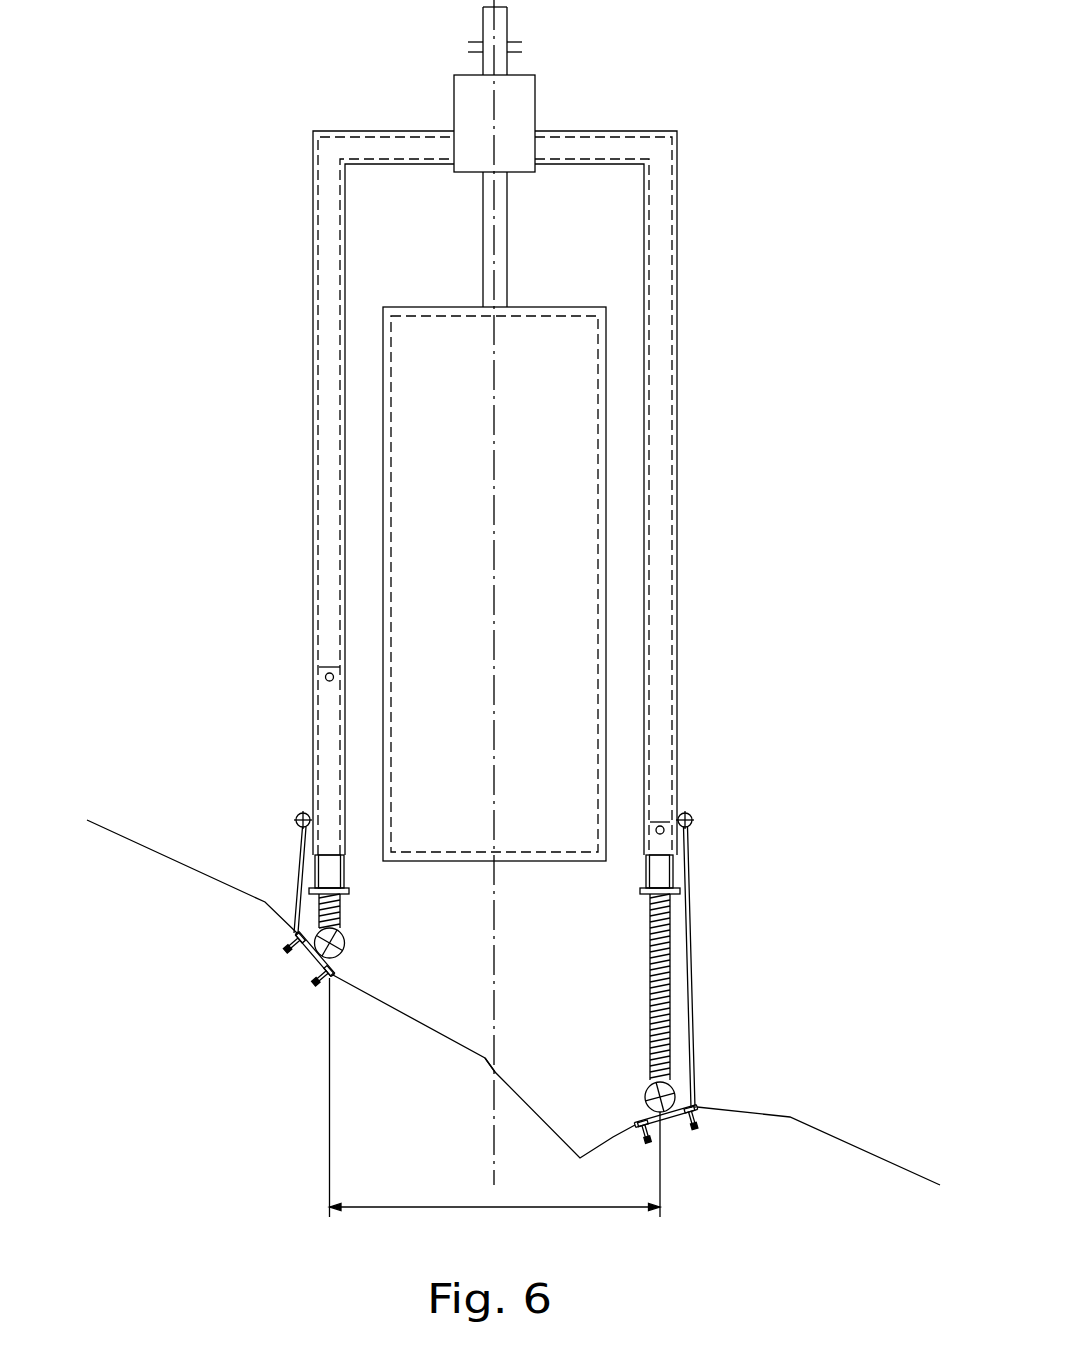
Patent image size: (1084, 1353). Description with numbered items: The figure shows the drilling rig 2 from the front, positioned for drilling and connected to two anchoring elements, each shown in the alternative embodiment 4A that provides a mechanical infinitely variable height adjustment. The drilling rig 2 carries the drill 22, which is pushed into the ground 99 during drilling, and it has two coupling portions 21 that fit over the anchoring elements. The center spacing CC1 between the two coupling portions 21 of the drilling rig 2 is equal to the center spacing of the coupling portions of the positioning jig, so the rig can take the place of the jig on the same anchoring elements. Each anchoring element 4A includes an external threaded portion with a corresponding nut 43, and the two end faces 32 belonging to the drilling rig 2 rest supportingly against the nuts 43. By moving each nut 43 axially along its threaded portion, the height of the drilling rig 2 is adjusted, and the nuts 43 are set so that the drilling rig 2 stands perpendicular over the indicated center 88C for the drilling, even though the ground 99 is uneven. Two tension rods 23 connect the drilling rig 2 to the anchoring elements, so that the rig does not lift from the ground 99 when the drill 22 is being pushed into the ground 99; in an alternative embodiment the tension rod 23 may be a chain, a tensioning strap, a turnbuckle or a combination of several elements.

The drilling rig 2 is at (677, 131).
The drill 22 is at (606, 540).
The anchoring element 4A is at (318, 762).
The coupling portion 21 is at (313, 882).
The end face 32 is at (677, 878).
The nut 43 is at (309, 893).
The tension rod 23 is at (299, 870).
The ground 99 is at (173, 860).
The center 88C is at (493, 1072).
The center spacing CC1 is at (495, 1097).